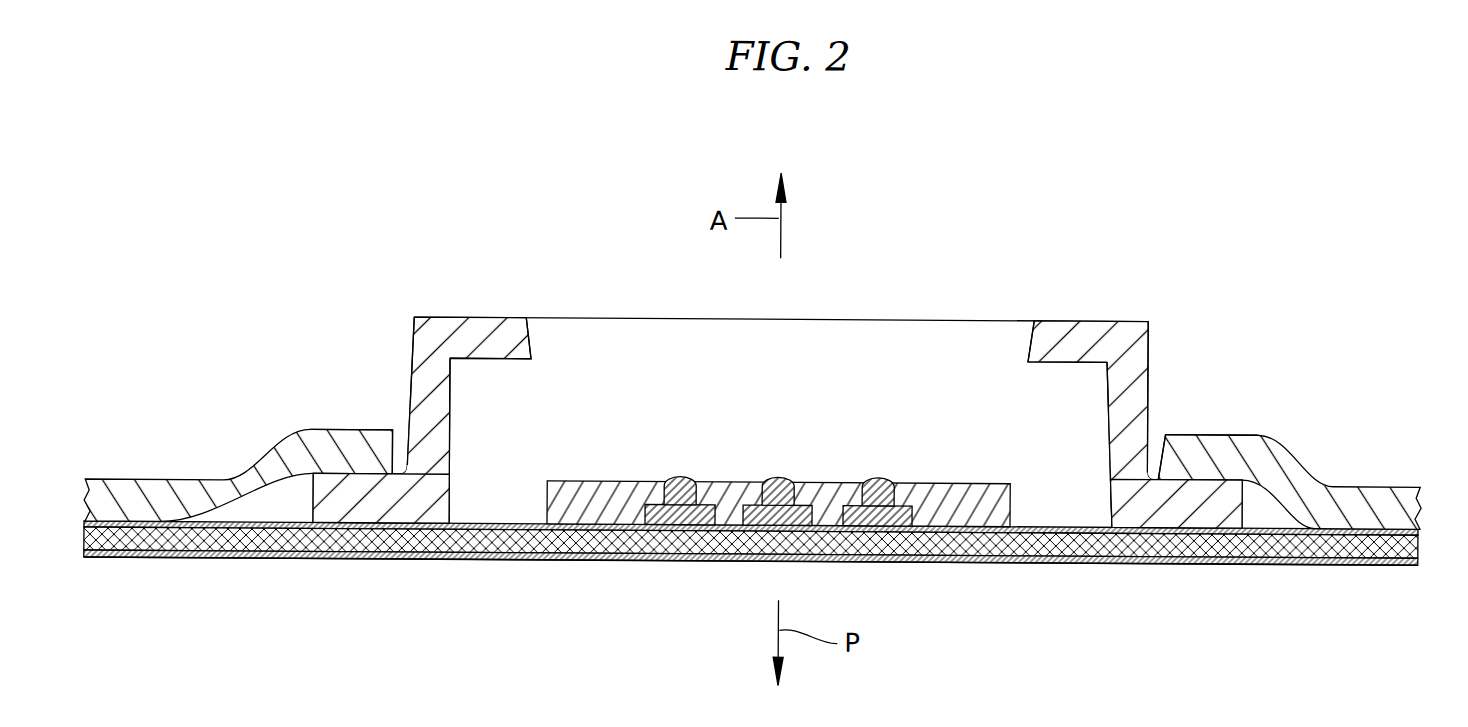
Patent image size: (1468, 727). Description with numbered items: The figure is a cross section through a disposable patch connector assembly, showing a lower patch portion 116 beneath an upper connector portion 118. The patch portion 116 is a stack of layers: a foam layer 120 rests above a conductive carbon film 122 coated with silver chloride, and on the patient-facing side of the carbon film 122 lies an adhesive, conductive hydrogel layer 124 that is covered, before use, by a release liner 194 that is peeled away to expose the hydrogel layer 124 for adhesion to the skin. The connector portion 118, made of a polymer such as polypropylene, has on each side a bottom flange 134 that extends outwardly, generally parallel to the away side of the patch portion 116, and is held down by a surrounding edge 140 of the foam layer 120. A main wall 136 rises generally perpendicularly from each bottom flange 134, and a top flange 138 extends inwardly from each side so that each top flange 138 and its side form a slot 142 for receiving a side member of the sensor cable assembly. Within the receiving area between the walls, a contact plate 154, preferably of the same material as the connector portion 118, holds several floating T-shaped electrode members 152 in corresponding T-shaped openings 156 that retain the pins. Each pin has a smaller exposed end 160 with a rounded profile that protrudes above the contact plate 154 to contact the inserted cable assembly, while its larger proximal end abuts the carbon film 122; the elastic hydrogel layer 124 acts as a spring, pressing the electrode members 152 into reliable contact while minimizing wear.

The lower patch portion 116 is at (767, 603).
The upper connector portion 118 is at (803, 367).
The foam layer 120 is at (177, 476).
The carbon film 122 is at (1420, 528).
The hydrogel layer 124 is at (1130, 555).
The bottom flange 134 is at (367, 498).
The main wall 136 is at (450, 422).
The top flange 138 is at (477, 313).
The surrounding edge 140 is at (357, 426).
The slot 142 is at (525, 377).
The electrode members 152 is at (645, 498).
The contact plate 154 is at (987, 470).
The T-shaped opening 156 is at (637, 521).
The smaller exposed end 160 is at (680, 472).
The release liner 194 is at (490, 555).